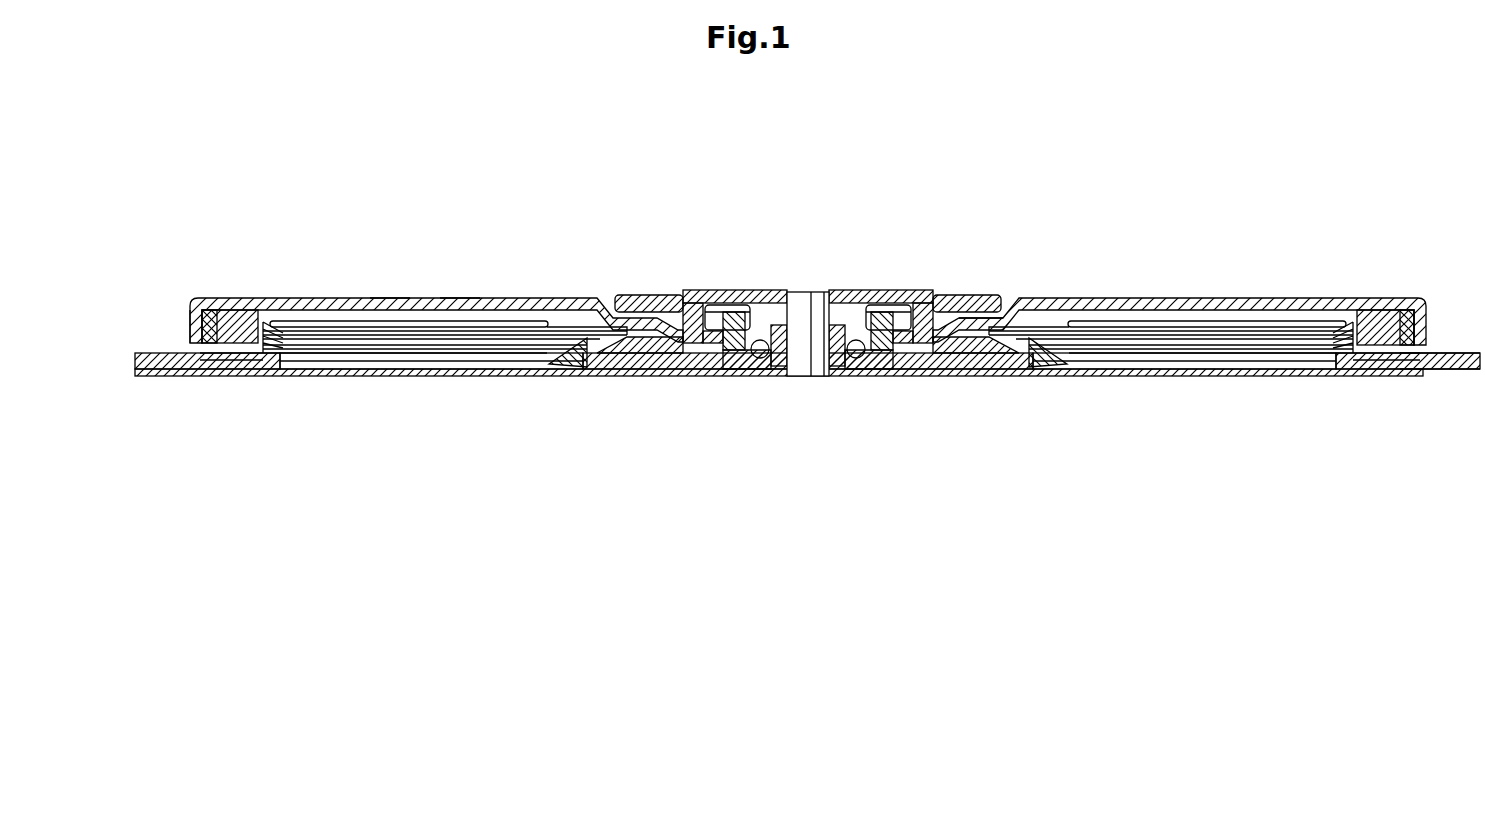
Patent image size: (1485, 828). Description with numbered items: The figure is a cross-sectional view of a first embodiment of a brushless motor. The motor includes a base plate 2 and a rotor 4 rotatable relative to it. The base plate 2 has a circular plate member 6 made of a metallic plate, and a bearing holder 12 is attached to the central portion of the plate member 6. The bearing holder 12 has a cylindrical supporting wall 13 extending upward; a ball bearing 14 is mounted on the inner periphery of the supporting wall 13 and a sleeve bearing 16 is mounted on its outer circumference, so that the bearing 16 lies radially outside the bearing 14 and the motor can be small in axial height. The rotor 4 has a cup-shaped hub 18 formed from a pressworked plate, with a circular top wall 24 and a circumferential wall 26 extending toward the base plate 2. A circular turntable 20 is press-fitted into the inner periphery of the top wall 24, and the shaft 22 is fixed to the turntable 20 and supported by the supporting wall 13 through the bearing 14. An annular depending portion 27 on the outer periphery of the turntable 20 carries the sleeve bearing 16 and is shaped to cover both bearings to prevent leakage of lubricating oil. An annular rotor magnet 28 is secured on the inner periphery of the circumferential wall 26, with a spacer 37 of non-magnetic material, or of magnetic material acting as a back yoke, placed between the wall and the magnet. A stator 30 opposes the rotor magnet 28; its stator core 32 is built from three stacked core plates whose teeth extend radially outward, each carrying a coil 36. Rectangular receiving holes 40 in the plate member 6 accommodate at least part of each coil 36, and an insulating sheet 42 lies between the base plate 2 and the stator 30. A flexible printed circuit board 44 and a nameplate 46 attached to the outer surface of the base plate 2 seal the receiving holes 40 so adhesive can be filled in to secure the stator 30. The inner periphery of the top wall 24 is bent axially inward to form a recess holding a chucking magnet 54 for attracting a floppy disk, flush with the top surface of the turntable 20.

The base plate 2 is at (1460, 377).
The rotor 4 is at (308, 297).
The circular plate member 6 is at (1440, 358).
The bearing holder 12 is at (940, 378).
The cylindrical supporting wall 13 is at (737, 322).
The bearing 14 is at (760, 312).
The bearing 16 is at (705, 360).
The cup-shaped hub 18 is at (458, 297).
The circular turntable 20 is at (712, 290).
The shaft 22 is at (803, 297).
The circular top wall 24 is at (388, 298).
The circumferential wall 26 is at (187, 322).
The annular depending portion 27 is at (668, 355).
The annular rotor magnet 28 is at (247, 310).
The stator 30 is at (575, 323).
The stator core 32 is at (466, 350).
The coil 36 is at (530, 297).
The spacer 37 is at (210, 337).
The receiving hole 40 is at (1340, 355).
The insulating sheet 42 is at (1046, 360).
The flexible printed circuit board 44 is at (245, 377).
The nameplate 46 is at (1113, 365).
The chucking magnet 54 is at (972, 297).